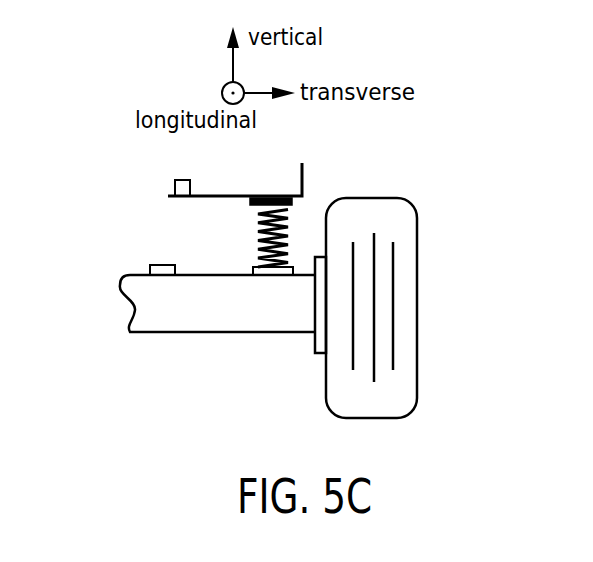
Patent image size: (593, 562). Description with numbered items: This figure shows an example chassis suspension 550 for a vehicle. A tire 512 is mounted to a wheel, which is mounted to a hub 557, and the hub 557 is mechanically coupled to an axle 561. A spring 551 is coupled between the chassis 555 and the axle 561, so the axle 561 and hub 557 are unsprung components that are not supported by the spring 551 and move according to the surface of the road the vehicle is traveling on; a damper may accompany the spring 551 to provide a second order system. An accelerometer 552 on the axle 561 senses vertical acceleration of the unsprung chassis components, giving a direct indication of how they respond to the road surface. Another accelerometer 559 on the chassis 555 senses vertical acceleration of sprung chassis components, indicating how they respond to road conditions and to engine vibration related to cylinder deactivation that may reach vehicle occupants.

The chassis suspension 550 is at (108, 178).
The tire 512 is at (417, 227).
The spring 551 is at (258, 226).
The accelerometer 552 is at (162, 265).
The chassis 555 is at (303, 177).
The hub 557 is at (323, 353).
The accelerometer 559 is at (182, 180).
The axle 561 is at (202, 334).